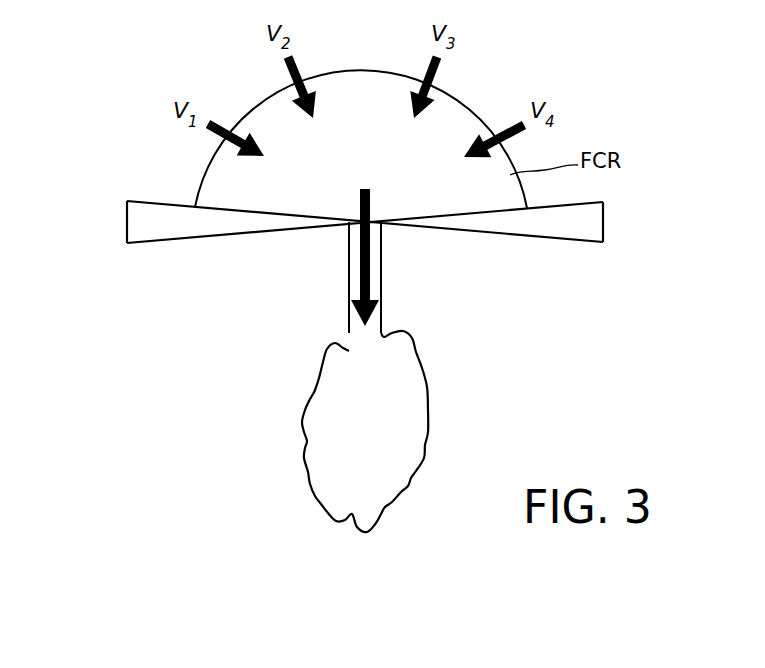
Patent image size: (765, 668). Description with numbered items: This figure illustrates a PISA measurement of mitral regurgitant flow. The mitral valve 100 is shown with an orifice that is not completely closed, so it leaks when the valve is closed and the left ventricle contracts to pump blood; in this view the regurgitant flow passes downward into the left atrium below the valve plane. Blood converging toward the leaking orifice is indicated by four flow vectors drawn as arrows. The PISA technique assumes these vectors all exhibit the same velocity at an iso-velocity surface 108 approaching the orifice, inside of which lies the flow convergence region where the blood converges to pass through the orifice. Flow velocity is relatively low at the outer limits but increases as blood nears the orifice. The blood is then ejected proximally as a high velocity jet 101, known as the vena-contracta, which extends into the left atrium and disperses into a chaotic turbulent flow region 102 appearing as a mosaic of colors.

The mitral valve 100 is at (140, 221).
The high velocity jet 101 is at (377, 270).
The turbulent flow region 102 is at (403, 422).
The iso-velocity surface 108 is at (258, 100).